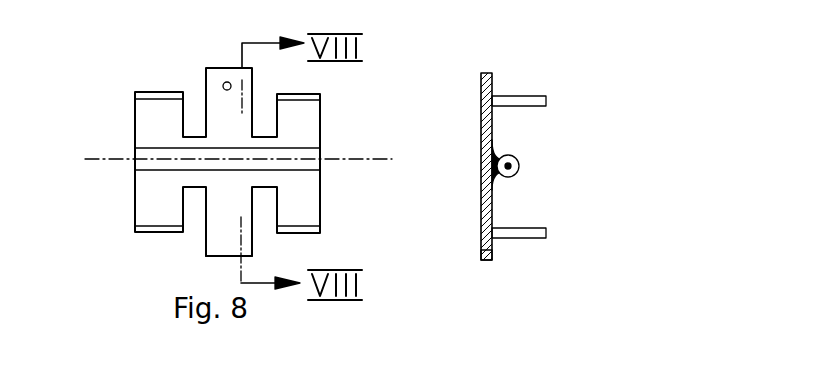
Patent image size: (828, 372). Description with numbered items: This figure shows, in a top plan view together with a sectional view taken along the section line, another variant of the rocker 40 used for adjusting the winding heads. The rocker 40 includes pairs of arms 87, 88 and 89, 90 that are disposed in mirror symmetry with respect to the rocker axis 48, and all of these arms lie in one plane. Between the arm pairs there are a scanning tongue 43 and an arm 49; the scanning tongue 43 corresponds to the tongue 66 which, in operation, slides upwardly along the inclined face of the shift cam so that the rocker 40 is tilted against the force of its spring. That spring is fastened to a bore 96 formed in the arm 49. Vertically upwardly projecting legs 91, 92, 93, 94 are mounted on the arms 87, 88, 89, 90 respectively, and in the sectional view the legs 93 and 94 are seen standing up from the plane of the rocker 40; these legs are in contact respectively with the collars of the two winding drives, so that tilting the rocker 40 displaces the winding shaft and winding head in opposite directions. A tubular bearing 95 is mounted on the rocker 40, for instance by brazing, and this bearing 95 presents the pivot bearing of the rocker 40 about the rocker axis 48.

The rocker 40 is at (315, 143).
The scanning tongue 43 is at (311, 262).
The rocker axis 48 is at (100, 157).
The arm 49 is at (213, 75).
The tongue 66 is at (480, 250).
The arm 87 is at (145, 122).
The arm 88 is at (143, 203).
The arm 89 is at (313, 115).
The arm 90 is at (315, 205).
The leg 91 is at (155, 96).
The leg 92 is at (147, 227).
The leg 93 is at (318, 98).
The leg 94 is at (318, 228).
The tubular bearing 95 is at (150, 165).
The bore 96 is at (228, 81).